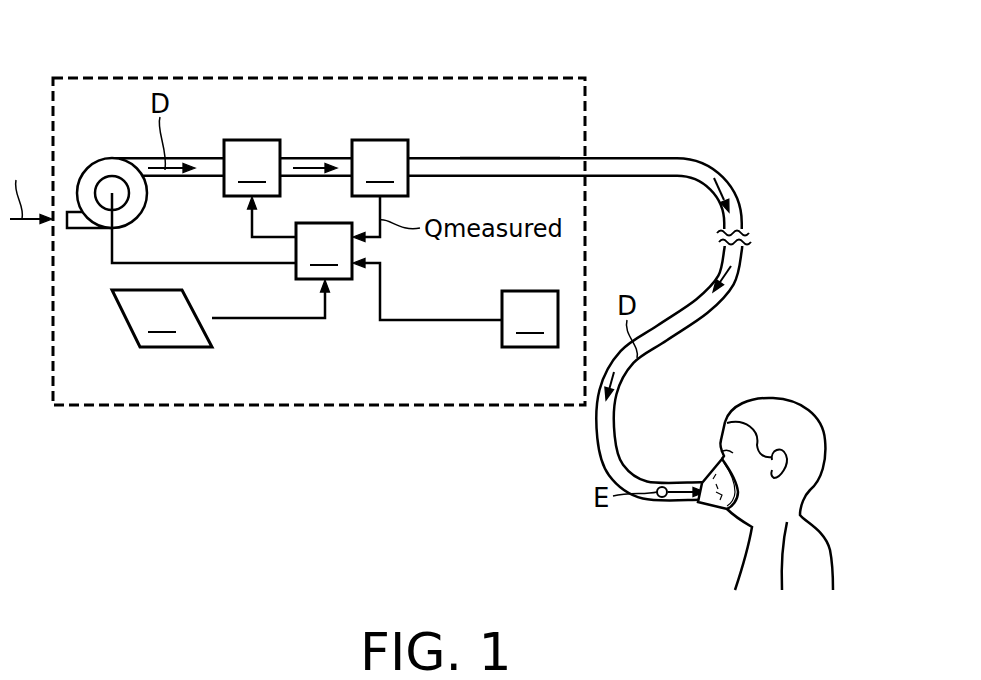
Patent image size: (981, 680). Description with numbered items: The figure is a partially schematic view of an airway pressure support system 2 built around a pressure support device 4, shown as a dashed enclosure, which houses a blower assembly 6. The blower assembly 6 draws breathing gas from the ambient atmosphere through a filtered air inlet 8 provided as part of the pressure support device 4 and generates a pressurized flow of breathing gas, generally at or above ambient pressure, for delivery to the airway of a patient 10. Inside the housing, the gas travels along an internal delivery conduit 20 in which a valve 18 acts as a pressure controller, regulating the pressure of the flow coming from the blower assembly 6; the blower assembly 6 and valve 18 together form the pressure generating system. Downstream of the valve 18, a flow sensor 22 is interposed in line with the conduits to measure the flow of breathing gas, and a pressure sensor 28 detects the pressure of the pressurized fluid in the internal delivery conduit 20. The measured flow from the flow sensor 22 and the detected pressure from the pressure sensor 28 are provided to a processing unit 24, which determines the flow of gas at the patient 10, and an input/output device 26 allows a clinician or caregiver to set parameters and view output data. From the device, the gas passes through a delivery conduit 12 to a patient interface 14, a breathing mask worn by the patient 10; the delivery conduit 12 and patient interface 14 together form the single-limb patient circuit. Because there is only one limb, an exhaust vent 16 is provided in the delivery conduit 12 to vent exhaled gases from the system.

The airway pressure support system 2 is at (718, 76).
The pressure support device 4 is at (543, 78).
The blower assembly 6 is at (90, 164).
The filtered air inlet 8 is at (44, 238).
The patient 10 is at (779, 397).
The delivery conduit 12 is at (740, 265).
The patient interface 14 is at (713, 512).
The exhaust vent 16 is at (662, 499).
The valve 18 is at (252, 168).
The internal delivery conduit 20 is at (446, 158).
The flow sensor 22 is at (380, 168).
The processing unit 24 is at (357, 258).
The input/output device 26 is at (162, 318).
The pressure sensor 28 is at (530, 319).